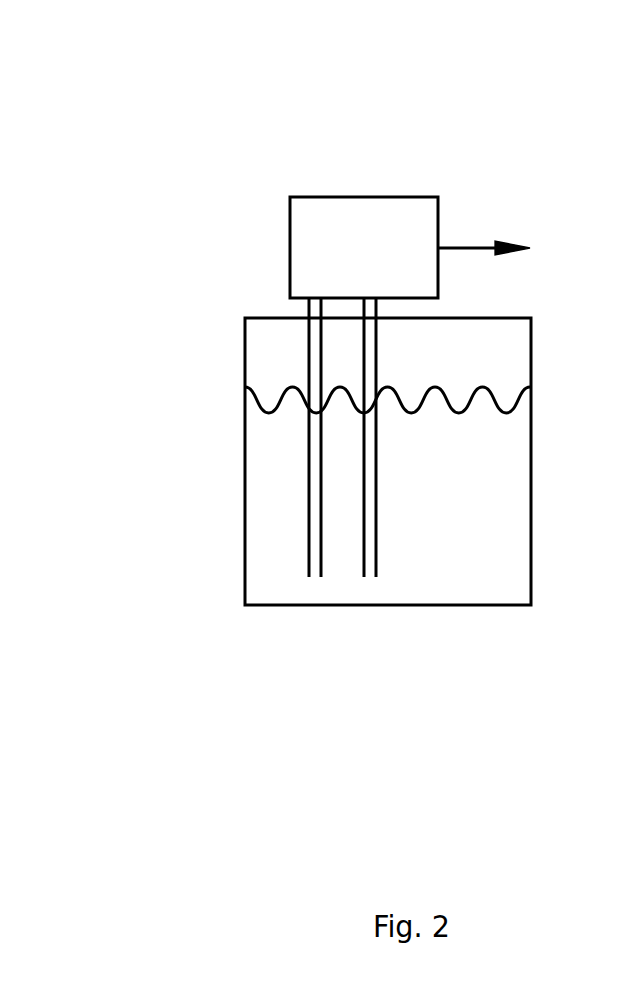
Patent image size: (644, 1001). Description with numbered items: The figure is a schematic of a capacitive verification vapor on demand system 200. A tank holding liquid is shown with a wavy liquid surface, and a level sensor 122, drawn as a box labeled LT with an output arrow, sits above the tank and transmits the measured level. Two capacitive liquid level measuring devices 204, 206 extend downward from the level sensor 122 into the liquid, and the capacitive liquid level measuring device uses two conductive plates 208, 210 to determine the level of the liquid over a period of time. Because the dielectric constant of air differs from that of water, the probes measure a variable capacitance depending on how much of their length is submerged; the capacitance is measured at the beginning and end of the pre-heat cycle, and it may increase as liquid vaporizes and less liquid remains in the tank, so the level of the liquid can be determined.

The gravimetric or capacitive verification vapor on demand system 200 is at (102, 62).
The level sensor (LT) 122 is at (312, 216).
The capacitive liquid level measuring device 204 is at (308, 471).
The capacitive liquid level measuring device 206 is at (320, 538).
The conductive plate 208 is at (372, 493).
The conductive plate 210 is at (362, 528).